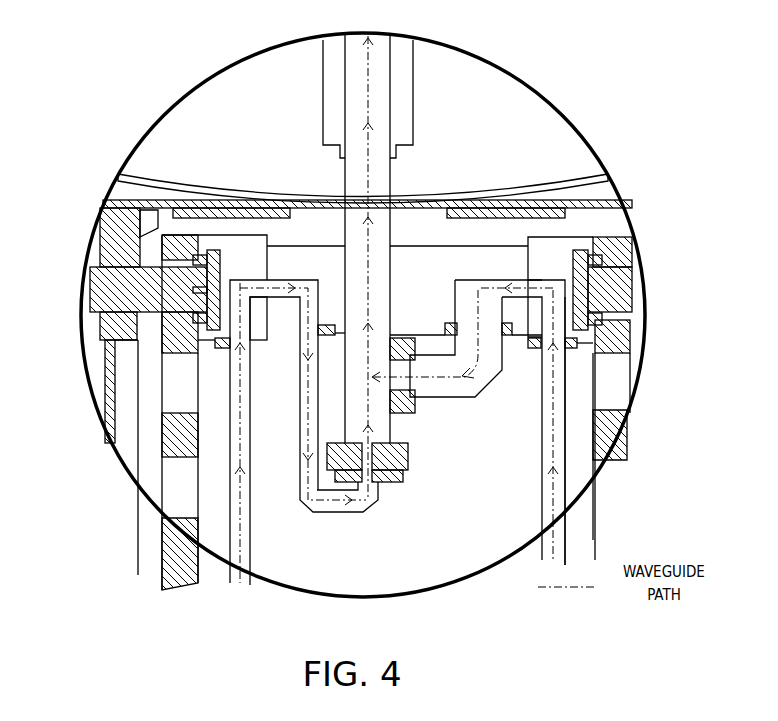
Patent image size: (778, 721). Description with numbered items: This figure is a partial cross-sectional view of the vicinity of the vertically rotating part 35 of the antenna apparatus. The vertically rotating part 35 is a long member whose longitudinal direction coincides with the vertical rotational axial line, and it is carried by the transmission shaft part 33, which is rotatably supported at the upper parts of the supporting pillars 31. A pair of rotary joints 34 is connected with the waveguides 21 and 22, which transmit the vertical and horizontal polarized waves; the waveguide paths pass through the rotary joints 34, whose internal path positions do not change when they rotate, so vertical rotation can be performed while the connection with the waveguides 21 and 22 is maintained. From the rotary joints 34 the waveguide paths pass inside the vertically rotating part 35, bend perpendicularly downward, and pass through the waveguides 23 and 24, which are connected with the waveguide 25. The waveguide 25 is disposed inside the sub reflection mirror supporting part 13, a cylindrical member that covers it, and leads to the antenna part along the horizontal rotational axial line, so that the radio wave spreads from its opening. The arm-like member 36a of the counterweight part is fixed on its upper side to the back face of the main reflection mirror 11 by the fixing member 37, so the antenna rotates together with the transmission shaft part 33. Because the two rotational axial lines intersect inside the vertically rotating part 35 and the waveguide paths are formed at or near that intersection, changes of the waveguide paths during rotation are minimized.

The main reflection mirror 11 is at (570, 176).
The sub reflection mirror supporting part 13 is at (327, 53).
The waveguide 21 is at (248, 551).
The waveguide 22 is at (547, 508).
The waveguide 23 is at (375, 503).
The waveguide 24 is at (453, 392).
The waveguide 25 is at (355, 107).
The supporting pillar 31 is at (167, 490).
The transmission shaft part 33 is at (100, 290).
The rotary joint 34 is at (235, 246).
The vertically rotating part 35 is at (427, 253).
The arm-like member 36a is at (110, 335).
The fixing member 37 is at (122, 203).